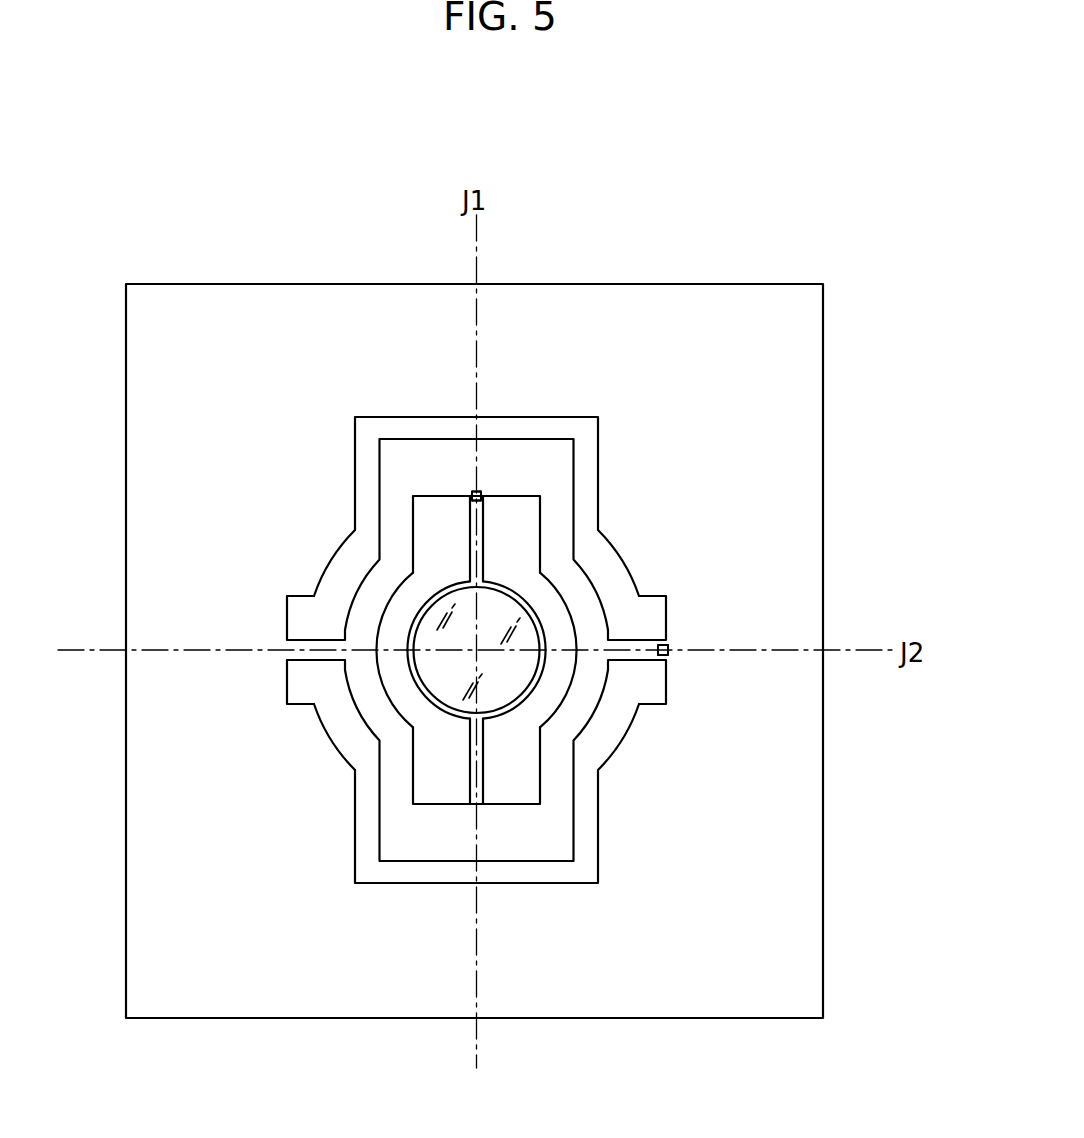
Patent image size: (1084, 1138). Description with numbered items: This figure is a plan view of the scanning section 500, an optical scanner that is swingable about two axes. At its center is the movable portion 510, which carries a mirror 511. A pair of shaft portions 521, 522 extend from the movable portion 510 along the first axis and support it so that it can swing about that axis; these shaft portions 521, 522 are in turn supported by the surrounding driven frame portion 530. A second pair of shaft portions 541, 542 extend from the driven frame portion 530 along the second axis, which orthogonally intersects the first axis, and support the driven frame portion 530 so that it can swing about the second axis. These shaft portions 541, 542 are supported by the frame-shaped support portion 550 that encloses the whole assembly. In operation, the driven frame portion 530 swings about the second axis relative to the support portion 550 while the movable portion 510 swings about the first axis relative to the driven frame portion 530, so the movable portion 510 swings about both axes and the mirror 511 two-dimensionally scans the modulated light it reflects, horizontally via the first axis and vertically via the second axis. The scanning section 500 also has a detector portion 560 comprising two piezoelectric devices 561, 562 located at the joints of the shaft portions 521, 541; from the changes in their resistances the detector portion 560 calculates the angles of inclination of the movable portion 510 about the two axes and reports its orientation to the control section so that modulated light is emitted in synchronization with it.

The scanning section 500 is at (694, 174).
The movable portion 510 is at (532, 605).
The mirror 511 is at (452, 683).
The shaft portion 521 is at (490, 515).
The shaft portion 522 is at (483, 775).
The driven frame portion 530 is at (547, 456).
The shaft portion 541 is at (635, 645).
The shaft portion 542 is at (317, 642).
The support portion 550 is at (725, 310).
The detector portion 560 is at (570, 574).
The piezoelectric device 561 is at (474, 491).
The piezoelectric device 562 is at (667, 657).